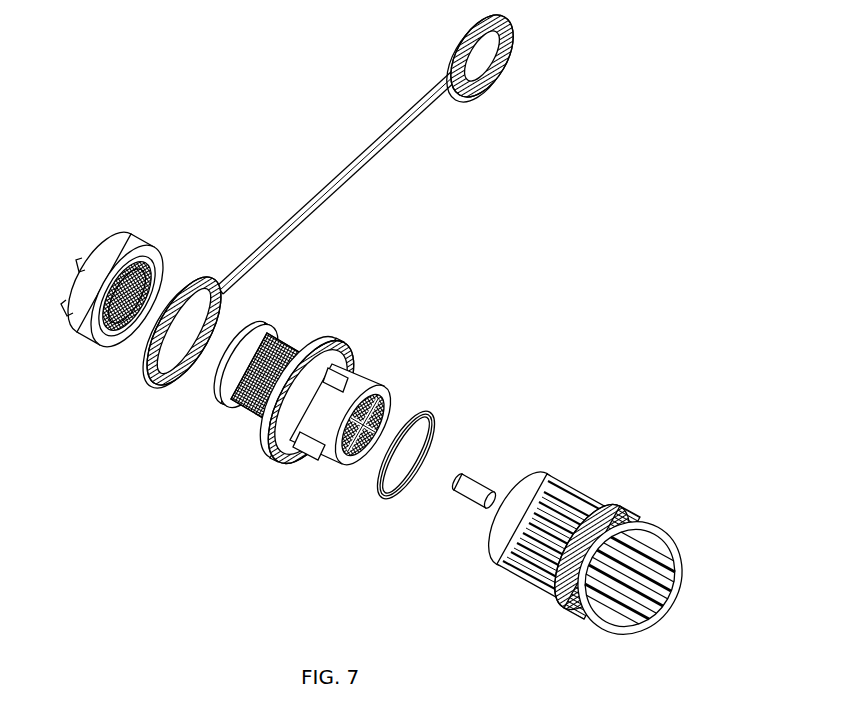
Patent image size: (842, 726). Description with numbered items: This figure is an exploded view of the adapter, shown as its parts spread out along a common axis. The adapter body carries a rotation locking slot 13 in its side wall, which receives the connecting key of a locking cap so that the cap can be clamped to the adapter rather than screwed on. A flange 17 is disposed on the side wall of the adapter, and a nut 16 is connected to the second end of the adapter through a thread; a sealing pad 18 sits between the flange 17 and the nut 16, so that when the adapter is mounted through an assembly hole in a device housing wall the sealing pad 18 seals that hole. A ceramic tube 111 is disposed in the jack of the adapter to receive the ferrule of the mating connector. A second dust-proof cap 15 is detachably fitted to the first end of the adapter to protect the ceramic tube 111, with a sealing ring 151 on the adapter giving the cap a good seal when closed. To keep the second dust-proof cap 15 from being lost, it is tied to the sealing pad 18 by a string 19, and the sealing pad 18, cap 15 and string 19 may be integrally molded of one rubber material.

The rotation locking slot 13 is at (301, 430).
The second dust-proof cap 15 is at (615, 504).
The nut 16 is at (80, 355).
The flange 17 is at (347, 343).
The sealing pad 18 is at (153, 368).
The string 19 is at (344, 157).
The ceramic tube 111 is at (479, 469).
The sealing ring 151 is at (427, 409).